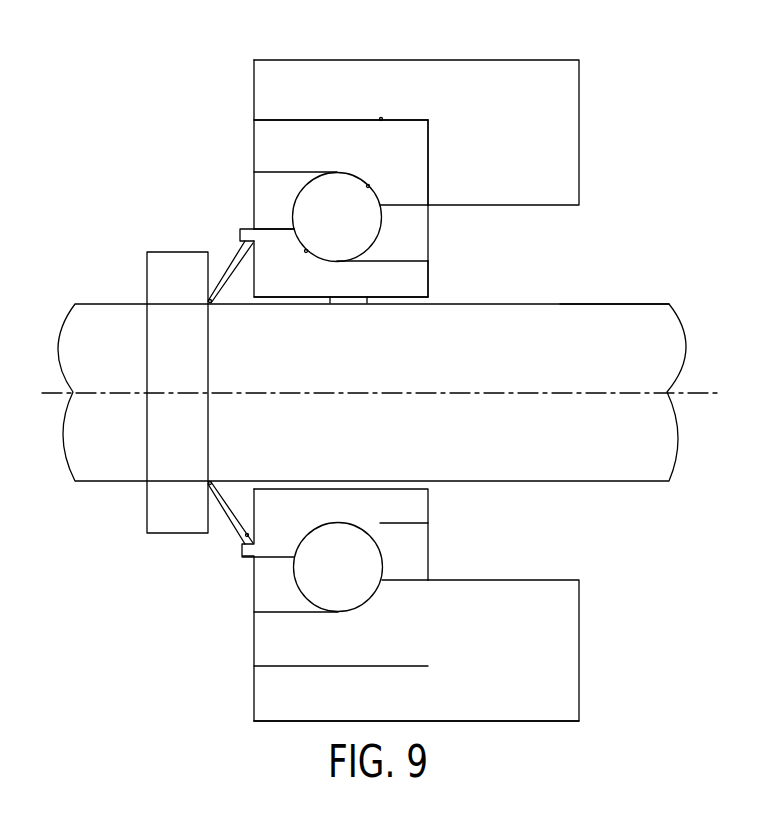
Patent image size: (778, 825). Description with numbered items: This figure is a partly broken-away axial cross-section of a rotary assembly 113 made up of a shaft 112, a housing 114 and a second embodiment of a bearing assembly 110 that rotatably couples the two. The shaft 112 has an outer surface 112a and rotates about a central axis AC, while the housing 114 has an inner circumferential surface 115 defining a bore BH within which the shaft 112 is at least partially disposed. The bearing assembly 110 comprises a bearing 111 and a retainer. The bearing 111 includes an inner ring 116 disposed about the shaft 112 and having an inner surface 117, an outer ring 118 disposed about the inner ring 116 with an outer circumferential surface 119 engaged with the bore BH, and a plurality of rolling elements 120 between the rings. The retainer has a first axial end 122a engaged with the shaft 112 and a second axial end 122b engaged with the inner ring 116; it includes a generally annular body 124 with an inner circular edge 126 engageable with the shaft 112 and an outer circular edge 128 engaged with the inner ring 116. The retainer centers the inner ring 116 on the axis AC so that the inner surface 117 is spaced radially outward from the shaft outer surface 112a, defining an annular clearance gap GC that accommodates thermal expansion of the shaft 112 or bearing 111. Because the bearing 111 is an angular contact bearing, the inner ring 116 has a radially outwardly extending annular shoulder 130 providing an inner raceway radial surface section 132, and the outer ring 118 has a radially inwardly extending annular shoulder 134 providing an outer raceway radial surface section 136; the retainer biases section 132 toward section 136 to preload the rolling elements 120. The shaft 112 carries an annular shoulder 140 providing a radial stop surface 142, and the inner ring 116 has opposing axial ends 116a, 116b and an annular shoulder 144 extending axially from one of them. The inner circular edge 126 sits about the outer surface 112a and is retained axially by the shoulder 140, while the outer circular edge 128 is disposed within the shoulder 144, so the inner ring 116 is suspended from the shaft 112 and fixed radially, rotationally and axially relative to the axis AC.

The bearing assembly 110 is at (165, 120).
The bearing 111 is at (220, 157).
The shaft 112 is at (80, 292).
The outer surface 112a is at (636, 303).
The rotary assembly 113 is at (100, 40).
The housing 114 is at (600, 110).
The inner circumferential surface 115 is at (293, 665).
The inner ring 116 is at (393, 296).
The axial end 116a is at (252, 296).
The axial end 116b is at (432, 282).
The inner surface 117 is at (367, 299).
The outer ring 118 is at (335, 126).
The outer circumferential surface 119 is at (355, 668).
The rolling elements 120 is at (384, 222).
The first axial end 122a is at (210, 482).
The second axial end 122b is at (246, 535).
The annular body 124 is at (243, 514).
The inner circular edge 126 is at (209, 300).
The outer circular edge 128 is at (245, 560).
The annular shoulder 130 is at (281, 237).
The inner raceway radial surface section 132 is at (306, 250).
The annular shoulder 134 is at (418, 178).
The outer raceway radial surface section 136 is at (368, 187).
The annular shoulder 140 is at (176, 268).
The radial stop surface 142 is at (212, 287).
The annular shoulder 144 is at (245, 229).
The central axis AC is at (703, 392).
The bore BH is at (381, 119).
The clearance gap GC is at (330, 299).